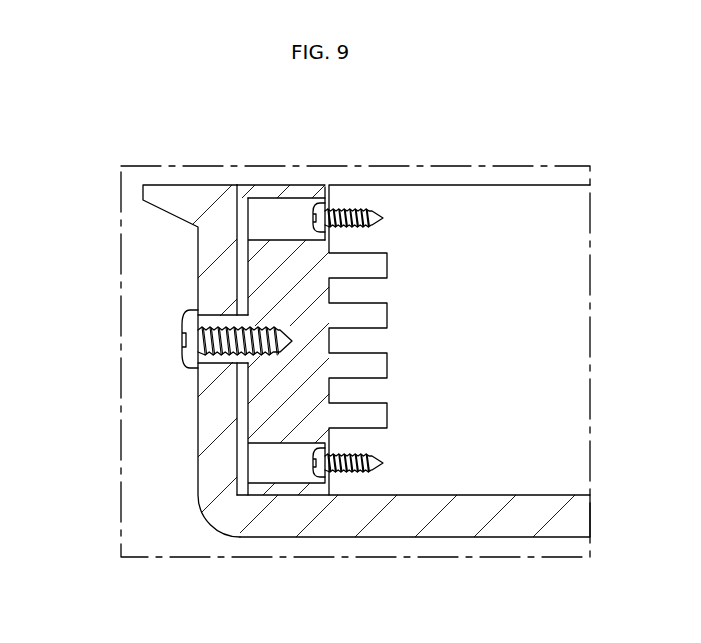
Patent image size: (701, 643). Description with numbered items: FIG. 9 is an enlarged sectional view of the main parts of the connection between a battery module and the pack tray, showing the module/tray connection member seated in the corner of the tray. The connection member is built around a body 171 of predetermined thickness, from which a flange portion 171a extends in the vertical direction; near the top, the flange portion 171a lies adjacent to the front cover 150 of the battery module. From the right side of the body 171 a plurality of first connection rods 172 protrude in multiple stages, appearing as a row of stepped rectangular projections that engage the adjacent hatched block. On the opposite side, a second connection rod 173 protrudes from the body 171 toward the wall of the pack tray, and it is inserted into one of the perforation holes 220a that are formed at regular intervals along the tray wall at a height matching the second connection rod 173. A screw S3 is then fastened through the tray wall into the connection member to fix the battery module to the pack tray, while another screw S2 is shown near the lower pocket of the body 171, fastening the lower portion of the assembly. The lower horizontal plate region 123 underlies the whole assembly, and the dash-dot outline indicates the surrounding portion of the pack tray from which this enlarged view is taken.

The front cover 150 is at (263, 190).
The flange portion 171a is at (327, 198).
The first connection rods 172 is at (371, 262).
The perforation holes 220a is at (208, 307).
The screw S3 is at (183, 332).
The second connection rod 173 is at (213, 362).
The body 171 is at (283, 425).
The screw S2 is at (340, 478).
The base plate 123 is at (455, 465).